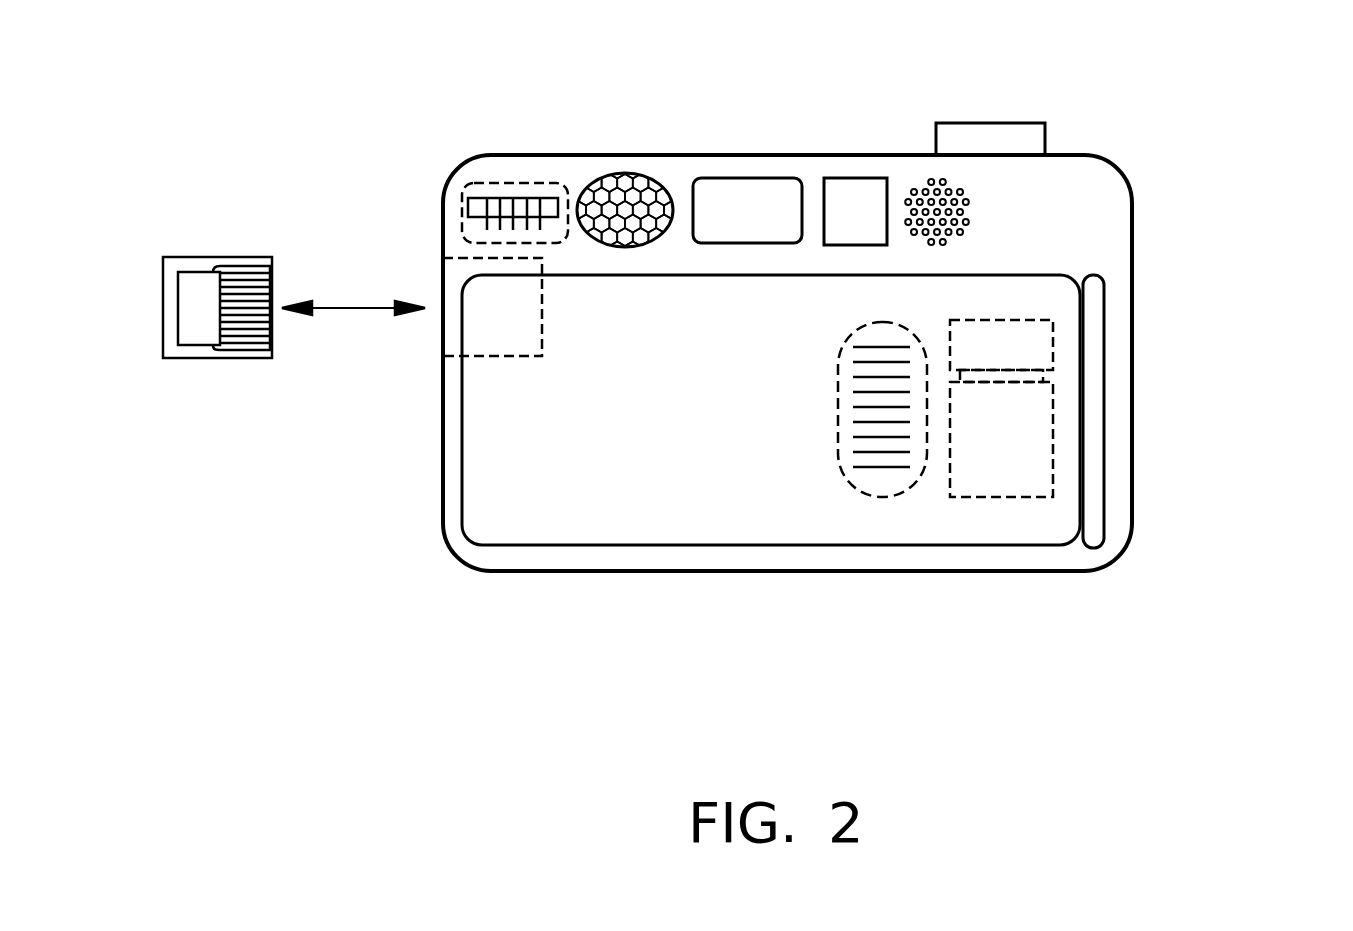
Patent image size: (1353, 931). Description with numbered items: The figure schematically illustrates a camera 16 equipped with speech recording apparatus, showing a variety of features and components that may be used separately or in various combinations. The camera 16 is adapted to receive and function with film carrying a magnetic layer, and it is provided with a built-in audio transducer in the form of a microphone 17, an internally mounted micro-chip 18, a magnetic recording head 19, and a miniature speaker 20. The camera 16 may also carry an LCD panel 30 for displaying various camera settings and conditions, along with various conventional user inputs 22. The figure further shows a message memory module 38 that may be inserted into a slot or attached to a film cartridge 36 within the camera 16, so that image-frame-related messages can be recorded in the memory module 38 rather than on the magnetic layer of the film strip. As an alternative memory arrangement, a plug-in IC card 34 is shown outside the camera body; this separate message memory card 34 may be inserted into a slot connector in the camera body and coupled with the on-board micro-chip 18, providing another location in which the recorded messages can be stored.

The camera 16 is at (1183, 181).
The microphone 17 is at (610, 175).
The micro-chip 18 is at (523, 183).
The magnetic recording head 19 is at (878, 497).
The miniature speaker 20 is at (926, 180).
The user inputs 22 is at (991, 123).
The LCD panel 30 is at (855, 178).
The plug-in IC card 34 is at (222, 257).
The film cartridge 36 is at (1002, 482).
The message memory module 38 is at (1043, 335).